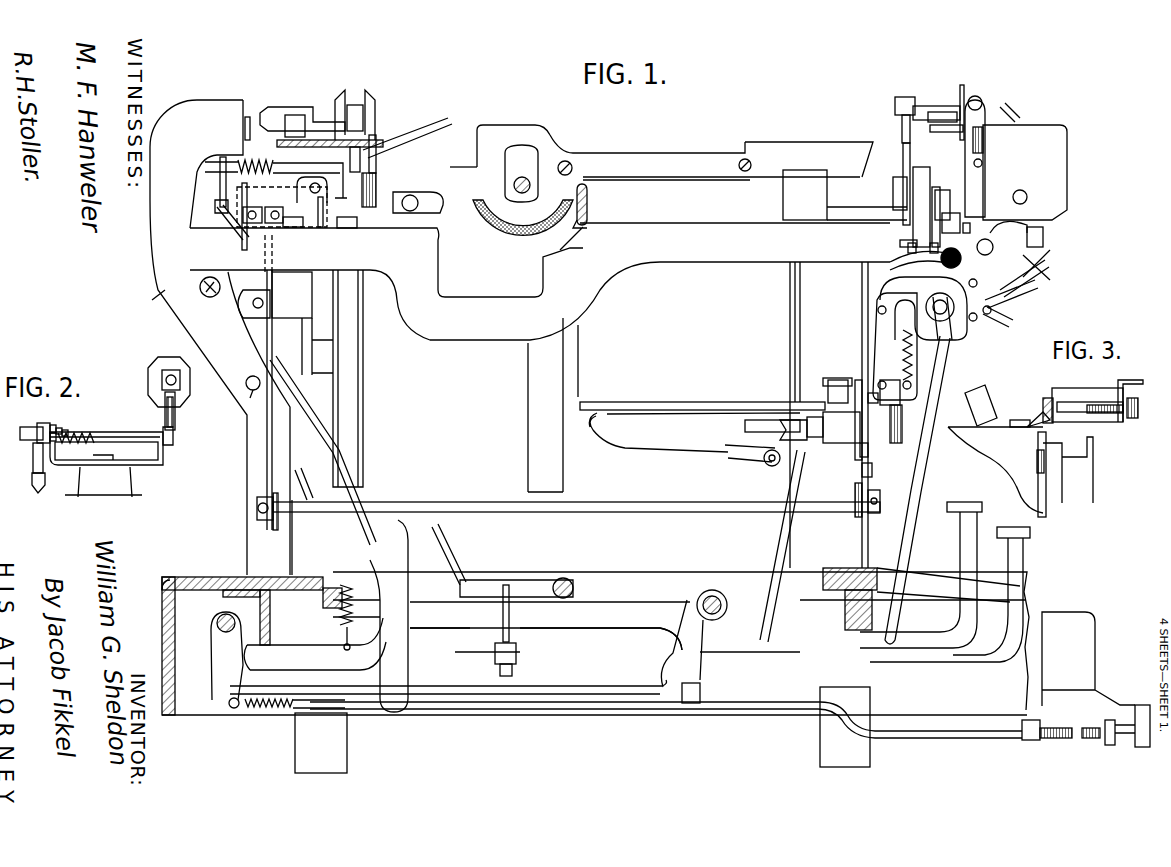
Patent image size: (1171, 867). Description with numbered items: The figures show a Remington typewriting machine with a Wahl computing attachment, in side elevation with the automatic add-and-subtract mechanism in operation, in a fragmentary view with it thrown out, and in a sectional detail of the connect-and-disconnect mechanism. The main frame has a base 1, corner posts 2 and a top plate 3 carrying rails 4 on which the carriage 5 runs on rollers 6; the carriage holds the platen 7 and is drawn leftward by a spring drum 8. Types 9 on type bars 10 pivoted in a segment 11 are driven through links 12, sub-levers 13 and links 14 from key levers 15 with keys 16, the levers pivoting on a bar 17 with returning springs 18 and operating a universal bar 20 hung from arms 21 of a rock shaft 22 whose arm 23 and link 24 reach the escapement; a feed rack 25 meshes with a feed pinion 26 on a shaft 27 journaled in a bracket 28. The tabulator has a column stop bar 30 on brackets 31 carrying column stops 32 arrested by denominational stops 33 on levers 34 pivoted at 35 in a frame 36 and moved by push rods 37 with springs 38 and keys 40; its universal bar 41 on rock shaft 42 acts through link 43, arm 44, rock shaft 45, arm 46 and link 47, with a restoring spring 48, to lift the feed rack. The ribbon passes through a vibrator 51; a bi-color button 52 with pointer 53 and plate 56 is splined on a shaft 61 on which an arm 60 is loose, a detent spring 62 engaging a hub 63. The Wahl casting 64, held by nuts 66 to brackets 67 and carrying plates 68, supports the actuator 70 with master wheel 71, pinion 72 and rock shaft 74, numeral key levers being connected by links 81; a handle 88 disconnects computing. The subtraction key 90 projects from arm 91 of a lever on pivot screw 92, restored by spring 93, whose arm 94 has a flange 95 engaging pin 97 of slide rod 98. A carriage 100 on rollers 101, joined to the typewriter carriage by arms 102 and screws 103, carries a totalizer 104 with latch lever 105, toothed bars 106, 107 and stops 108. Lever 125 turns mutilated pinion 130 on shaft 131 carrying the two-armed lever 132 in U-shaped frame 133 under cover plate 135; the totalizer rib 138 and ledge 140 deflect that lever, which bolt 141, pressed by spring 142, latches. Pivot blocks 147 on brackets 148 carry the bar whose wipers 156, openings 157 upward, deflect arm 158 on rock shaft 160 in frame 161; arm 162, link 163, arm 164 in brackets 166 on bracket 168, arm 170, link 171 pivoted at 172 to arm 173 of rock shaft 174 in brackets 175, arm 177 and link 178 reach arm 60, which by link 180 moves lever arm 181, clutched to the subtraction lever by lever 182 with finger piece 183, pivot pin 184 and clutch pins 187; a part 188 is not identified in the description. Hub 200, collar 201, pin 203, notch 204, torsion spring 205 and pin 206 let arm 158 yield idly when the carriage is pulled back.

In FIG. 1, the base 1 is at (630, 578).
In FIG. 1, the corner posts 2 is at (795, 340).
In FIG. 1, the top plate 3 is at (725, 262).
In FIG. 1, the stationary rails 4 is at (398, 223).
In FIG. 1, the carriage 5 is at (612, 155).
In FIG. 1, the bearing balls or rollers 6 is at (416, 200).
In FIG. 1, the platen 7 is at (496, 222).
In FIG. 1, the spring drum 8 is at (360, 338).
In FIG. 1, the types 9 is at (837, 383).
In FIG. 1, the type bars 10 is at (668, 402).
In FIG. 1, the segment 11 is at (563, 456).
In FIG. 1, the links 12 is at (622, 447).
In FIG. 1, the sub-levers 13 is at (731, 458).
In FIG. 1, the links 14 is at (777, 543).
In FIG. 1, the printing key levers 15 is at (620, 624).
In FIG. 1, the keys or buttons 16 is at (950, 582).
In FIG. 1, the bar 17 is at (256, 617).
In FIG. 1, the returning springs 18 is at (340, 615).
In FIG. 1, the universal bar 20 is at (518, 648).
In FIG. 1, the arms 21 is at (510, 585).
In FIG. 1, the rock shaft 22 is at (574, 588).
In FIG. 1, the arm 23 is at (480, 585).
In FIG. 1, the link 24 is at (449, 554).
In FIG. 1, the feed rack 25 is at (392, 145).
In FIG. 1, the feed pinion 26 is at (380, 188).
In FIG. 1, the shaft 27 is at (348, 213).
In FIG. 2, the bracket 28 is at (125, 480).
In FIG. 1, the column stop bar 30 is at (283, 125).
In FIG. 1, the brackets 31 is at (374, 148).
In FIG. 1, the column stops 32 is at (275, 108).
In FIG. 1, the denominational stops 33 is at (256, 114).
In FIG. 1, the long levers 34 is at (360, 522).
In FIG. 1, the pivot 35 is at (253, 394).
In FIG. 1, the frame 36 is at (232, 337).
In FIG. 1, the push rods 37 is at (578, 709).
In FIG. 1, the returning spring 38 is at (1058, 740).
In FIG. 1, the denominational tabulator keys 40 is at (1096, 679).
In FIG. 1, the universal bar 41 is at (690, 703).
In FIG. 1, the rock shaft 42 is at (724, 597).
In FIG. 1, the link 43 is at (434, 688).
In FIG. 1, the arm 44 is at (222, 688).
In FIG. 1, the rock shaft 45 is at (223, 634).
In FIG. 1, the arm 46 is at (373, 567).
In FIG. 1, the link 47 is at (305, 475).
In FIG. 1, the restoring spring 48 is at (262, 708).
In FIG. 1, the ribbon vibrator 51 is at (588, 210).
In FIG. 1, the button 52 is at (896, 445).
In FIG. 1, the pointer 53 is at (880, 395).
In FIG. 1, the plate 56 is at (856, 380).
In FIG. 1, the arm 60 is at (860, 452).
In FIG. 1, the shaft 61 is at (745, 426).
In FIG. 1, the detent spring 62 is at (800, 442).
In FIG. 1, the hub 63 is at (836, 443).
In FIG. 1, the casting 64 is at (923, 207).
In FIG. 1, the nuts 66 is at (893, 190).
In FIG. 1, the brackets 67 is at (848, 218).
In FIG. 1, the vertical plates 68 is at (900, 395).
In FIG. 1, the actuator 70 is at (1029, 278).
In FIG. 3, the actuator 70 is at (1006, 413).
In FIG. 1, the master wheel 71 is at (1000, 222).
In FIG. 1, the pinion 72 is at (1025, 238).
In FIG. 1, the rock shaft 74 is at (1006, 321).
In FIG. 1, the link 81 is at (912, 520).
In FIG. 1, the handle 88 is at (1042, 263).
In FIG. 1, the subtraction key 90 is at (1016, 296).
In FIG. 1, the arm 91 is at (995, 320).
In FIG. 1, the pivot screw 92 is at (926, 302).
In FIG. 1, the restoring spring 93 is at (896, 355).
In FIG. 1, the upwardly projecting arm 94 is at (922, 264).
In FIG. 1, the curved flange 95 is at (928, 217).
In FIG. 1, the pin 97 is at (959, 258).
In FIG. 1, the slide rod 98 is at (990, 251).
In FIG. 1, the carriage 100 is at (938, 205).
In FIG. 3, the carriage 100 is at (1062, 478).
In FIG. 1, the rollers 101 is at (917, 189).
In FIG. 1, the arms 102 is at (843, 142).
In FIG. 1, the screws 103 is at (985, 177).
In FIG. 1, the totalizer 104 is at (1025, 172).
In FIG. 3, the totalizer 104 is at (985, 445).
In FIG. 1, the latch lever 105 is at (1022, 114).
In FIG. 3, the latch lever 105 is at (982, 395).
In FIG. 1, the toothed bar 106 is at (983, 142).
In FIG. 3, the toothed bar 106 is at (1032, 471).
In FIG. 1, the toothed bar 107 is at (975, 225).
In FIG. 1, the stops 108 is at (980, 103).
In FIG. 1, the angled lever 125 is at (903, 157).
In FIG. 1, the mutilated pinion 130 is at (902, 118).
In FIG. 3, the mutilated pinion 130 is at (1132, 418).
In FIG. 3, the shaft 131 is at (1078, 402).
In FIG. 1, the two-armed lever 132 is at (963, 90).
In FIG. 3, the two-armed lever 132 is at (1060, 425).
In FIG. 1, the U-shaped frame 133 is at (952, 106).
In FIG. 1, the cover plate 135 is at (938, 110).
In FIG. 3, the cover plate 135 is at (1060, 388).
In FIG. 3, the rib 138 is at (1032, 425).
In FIG. 3, the ledge 140 is at (1038, 450).
In FIG. 3, the bolt 141 is at (1098, 405).
In FIG. 3, the light spring 142 is at (1120, 380).
In FIG. 1, the pivot blocks 147 is at (360, 106).
In FIG. 1, the brackets 148 is at (348, 122).
In FIG. 1, the wipers 156 is at (371, 112).
In FIG. 2, the wipers 156 is at (155, 362).
In FIG. 1, the opening 157 is at (352, 90).
In FIG. 2, the opening 157 is at (176, 395).
In FIG. 1, the arm 158 is at (350, 147).
In FIG. 2, the arm 158 is at (174, 415).
In FIG. 1, the rock shaft 160 is at (275, 168).
In FIG. 2, the rock shaft 160 is at (140, 437).
In FIG. 1, the U-shaped frame 161 is at (330, 212).
In FIG. 2, the U-shaped frame 161 is at (163, 450).
In FIG. 1, the arm 162 is at (220, 192).
In FIG. 2, the arm 162 is at (33, 460).
In FIG. 1, the link 163 is at (228, 228).
In FIG. 2, the link 163 is at (38, 493).
In FIG. 1, the arm 164 is at (255, 232).
In FIG. 1, the brackets 166 is at (208, 213).
In FIG. 1, the bracket 168 is at (300, 227).
In FIG. 1, the arm 170 is at (280, 200).
In FIG. 1, the link 171 is at (273, 340).
In FIG. 1, the pivot 172 is at (264, 520).
In FIG. 1, the arm 173 is at (292, 530).
In FIG. 1, the long rock shaft 174 is at (420, 502).
In FIG. 1, the brackets 175 is at (278, 499).
In FIG. 1, the arm 177 is at (878, 492).
In FIG. 1, the link 178 is at (870, 470).
In FIG. 1, the link 180 is at (873, 325).
In FIG. 1, the lever arm 181 is at (914, 306).
In FIG. 1, the lever 182 is at (912, 250).
In FIG. 1, the knurled finger piece 183 is at (935, 250).
In FIG. 1, the pivot pin 184 is at (978, 288).
In FIG. 1, the clutch pins 187 is at (952, 340).
In FIG. 1, the pivot 188 is at (976, 322).
In FIG. 2, the hub 200 is at (43, 425).
In FIG. 2, the collar 201 is at (21, 421).
In FIG. 2, the pin 203 is at (67, 427).
In FIG. 2, the notch 204 is at (54, 425).
In FIG. 2, the torsion spring 205 is at (85, 428).
In FIG. 2, the pin 206 is at (90, 424).